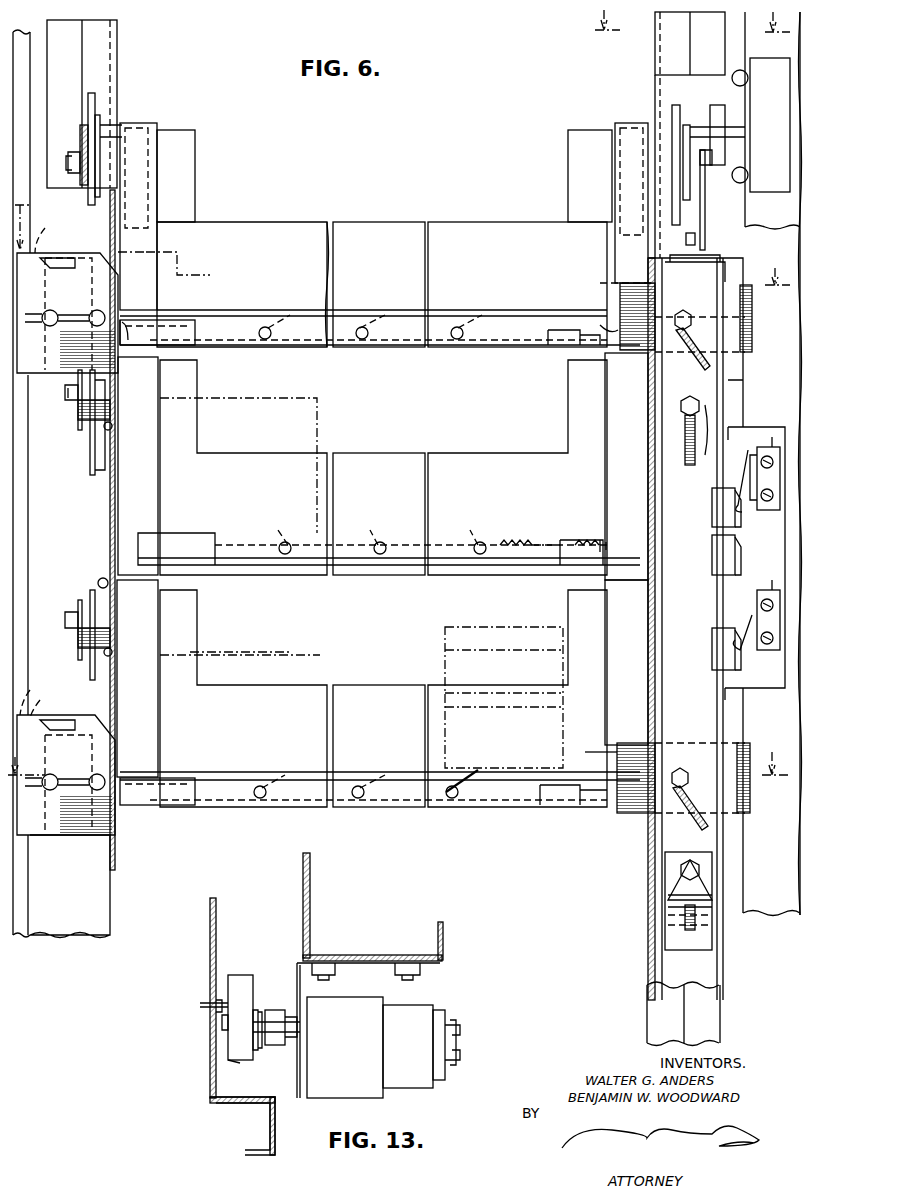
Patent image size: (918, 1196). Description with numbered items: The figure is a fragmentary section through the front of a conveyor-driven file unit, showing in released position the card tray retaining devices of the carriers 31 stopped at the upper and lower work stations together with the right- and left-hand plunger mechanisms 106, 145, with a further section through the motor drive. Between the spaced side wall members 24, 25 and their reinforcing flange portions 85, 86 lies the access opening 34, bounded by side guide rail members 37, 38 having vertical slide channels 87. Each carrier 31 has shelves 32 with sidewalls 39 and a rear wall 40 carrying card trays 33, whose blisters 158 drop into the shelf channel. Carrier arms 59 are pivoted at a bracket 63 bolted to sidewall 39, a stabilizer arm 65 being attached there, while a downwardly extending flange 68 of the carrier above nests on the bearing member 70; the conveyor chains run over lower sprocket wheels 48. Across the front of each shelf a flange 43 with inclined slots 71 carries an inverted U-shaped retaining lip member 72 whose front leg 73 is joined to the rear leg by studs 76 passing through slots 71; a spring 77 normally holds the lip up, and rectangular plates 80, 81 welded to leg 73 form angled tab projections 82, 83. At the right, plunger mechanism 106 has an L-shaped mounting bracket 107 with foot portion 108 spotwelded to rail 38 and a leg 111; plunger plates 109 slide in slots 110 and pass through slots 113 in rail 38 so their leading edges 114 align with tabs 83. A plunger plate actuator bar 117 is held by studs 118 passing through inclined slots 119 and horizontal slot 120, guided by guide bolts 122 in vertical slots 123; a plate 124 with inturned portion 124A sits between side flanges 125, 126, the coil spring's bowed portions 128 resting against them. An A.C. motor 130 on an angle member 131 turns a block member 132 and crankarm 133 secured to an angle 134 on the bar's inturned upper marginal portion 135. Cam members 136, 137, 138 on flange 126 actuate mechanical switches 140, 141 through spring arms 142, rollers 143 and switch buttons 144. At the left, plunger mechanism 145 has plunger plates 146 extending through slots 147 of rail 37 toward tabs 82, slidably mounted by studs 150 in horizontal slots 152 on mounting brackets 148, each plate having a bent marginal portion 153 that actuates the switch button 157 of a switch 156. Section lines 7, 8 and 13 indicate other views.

In FIG. 6, the side wall member 24 is at (24, 33).
In FIG. 6, the reinforcing flange portion 85 is at (47, 70).
In FIG. 6, the side guide rail member 37 is at (73, 76).
In FIG. 6, the bracket 63 is at (133, 123).
In FIG. 6, the side wall 39 is at (157, 126).
In FIG. 6, the lower sprocket wheel 48 is at (262, 223).
In FIG. 6, the section line 7- 7 is at (402, 255).
In FIG. 6, the switch button 157 is at (52, 462).
In FIG. 6, the plunger mechanism 145 is at (93, 248).
In FIG. 6, the switch 156 is at (62, 256).
In FIG. 6, the slot 147 is at (120, 262).
In FIG. 6, the elongated horizontal slot 152 is at (75, 310).
In FIG. 6, the stud 150 is at (105, 315).
In FIG. 6, the front leg 73 is at (220, 320).
In FIG. 6, the retaining lip member 72 is at (256, 326).
In FIG. 6, the inclined slot 71 is at (290, 318).
In FIG. 6, the shelf 32 is at (347, 310).
In FIG. 6, the rectangular plate 81 is at (562, 325).
In FIG. 6, the angled tab projection 83 is at (603, 325).
In FIG. 6, the plunger plate 109 is at (620, 283).
In FIG. 13, the plunger plate 109 is at (210, 1010).
In FIG. 6, the slot 113 is at (640, 283).
In FIG. 13, the slot 113 is at (205, 1003).
In FIG. 6, the rectangular plate 80 is at (185, 345).
In FIG. 6, the stud 76 is at (266, 340).
In FIG. 6, the flange 43 is at (521, 345).
In FIG. 6, the angled tab projection 82 is at (128, 348).
In FIG. 6, the mounting bracket 148 is at (62, 385).
In FIG. 6, the plunger plate 146 is at (65, 405).
In FIG. 6, the bearing member 70 is at (112, 428).
In FIG. 6, the carrier arm 59 is at (90, 466).
In FIG. 6, the rear wall 40 is at (262, 462).
In FIG. 6, the card tray 33 is at (320, 422).
In FIG. 6, the opening 34 is at (410, 436).
In FIG. 6, the carrier 31 is at (560, 194).
In FIG. 6, the elongated inclined slot 119 is at (692, 365).
In FIG. 6, the elongated vertical slot 123 is at (685, 455).
In FIG. 6, the guide bolt 122 is at (750, 876).
In FIG. 6, the flange 68 is at (98, 583).
In FIG. 6, the spring 77 is at (520, 540).
In FIG. 6, the plunger plate actuator bar 117 is at (678, 519).
In FIG. 6, the spring arm 142 is at (742, 470).
In FIG. 6, the switch button 144 is at (763, 562).
In FIG. 6, the mechanical switch 140 is at (752, 503).
In FIG. 6, the angled cam member 136 is at (714, 522).
In FIG. 6, the roller 143 is at (740, 520).
In FIG. 6, the angled cam member 137 is at (712, 572).
In FIG. 6, the angled cam member 138 is at (712, 642).
In FIG. 6, the mechanical switch 141 is at (762, 792).
In FIG. 6, the stabilizer arm 65 is at (78, 655).
In FIG. 6, the marginal portion 153 is at (41, 692).
In FIG. 6, the blister 158 is at (190, 765).
In FIG. 6, the leading edge 114 is at (605, 752).
In FIG. 13, the leading edge 114 is at (200, 1006).
In FIG. 6, the stud 118 is at (735, 312).
In FIG. 6, the elongated horizontal slot 120 is at (745, 326).
In FIG. 6, the section line 8- 8 is at (399, 778).
In FIG. 6, the plate 124 is at (705, 862).
In FIG. 6, the inturned marginal portion 124A is at (712, 902).
In FIG. 6, the bowed portion 128 is at (660, 900).
In FIG. 6, the side flange 125 is at (660, 945).
In FIG. 6, the side flange 126 is at (715, 950).
In FIG. 6, the slot 110 is at (740, 352).
In FIG. 13, the slot 110 is at (222, 1003).
In FIG. 6, the mounting bracket 107 is at (735, 372).
In FIG. 13, the mounting bracket 107 is at (273, 1010).
In FIG. 6, the reinforcing flange portion 86 is at (752, 18).
In FIG. 13, the reinforcing flange portion 86 is at (385, 957).
In FIG. 6, the bracket leg 111 is at (740, 420).
In FIG. 6, the plunger mechanism 106 is at (748, 282).
In FIG. 13, the plunger mechanism 106 is at (278, 953).
In FIG. 6, the angle member 131 is at (767, 220).
In FIG. 13, the angle member 131 is at (380, 975).
In FIG. 6, the inturned upper marginal portion 135 is at (712, 256).
In FIG. 13, the inturned upper marginal portion 135 is at (225, 1025).
In FIG. 6, the angle 134 is at (686, 238).
In FIG. 13, the angle 134 is at (232, 1057).
In FIG. 6, the crankarm 133 is at (706, 215).
In FIG. 13, the crankarm 133 is at (258, 1060).
In FIG. 6, the block member 132 is at (722, 152).
In FIG. 13, the block member 132 is at (280, 1045).
In FIG. 6, the A.C. motor 130 is at (782, 124).
In FIG. 13, the A.C. motor 130 is at (365, 1060).
In FIG. 6, the side wall member 25 is at (795, 52).
In FIG. 13, the side wall member 25 is at (312, 900).
In FIG. 6, the section line 13- 13 is at (686, 33).
In FIG. 6, the side guide rail member 38 is at (668, 55).
In FIG. 13, the side guide rail member 38 is at (216, 910).
In FIG. 13, the foot portion 108 is at (220, 1002).
In FIG. 13, the vertical slide channel 87 is at (258, 1126).